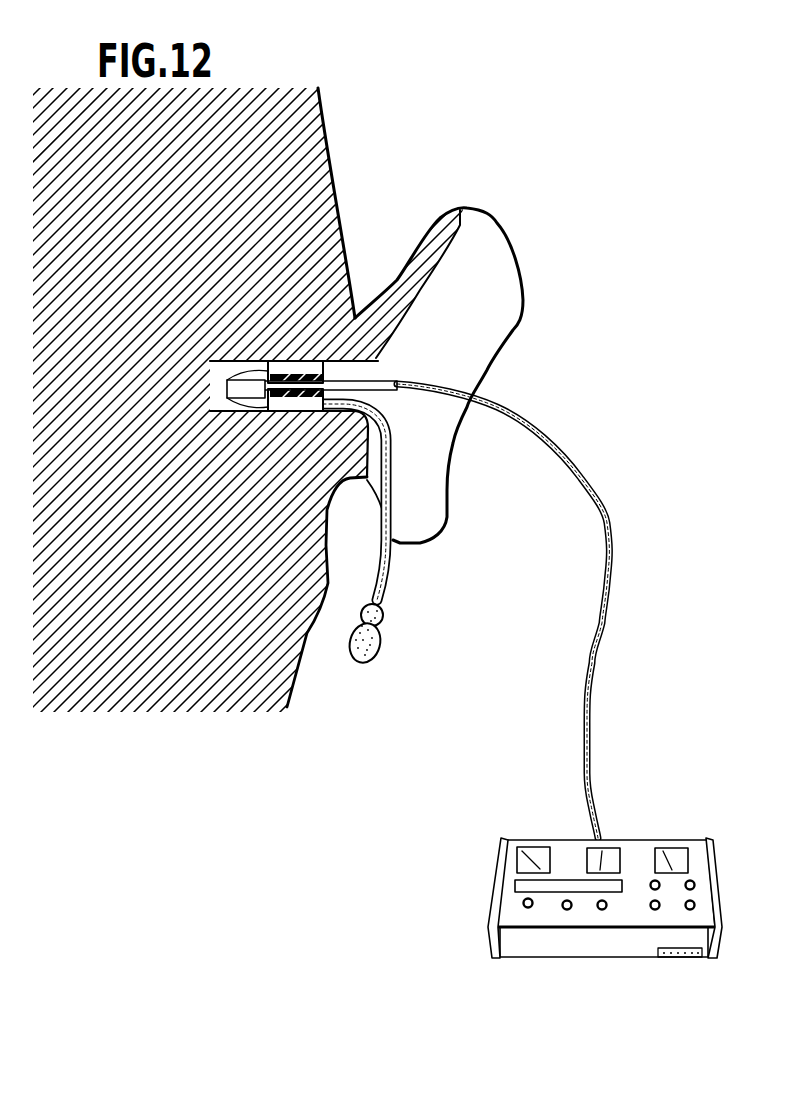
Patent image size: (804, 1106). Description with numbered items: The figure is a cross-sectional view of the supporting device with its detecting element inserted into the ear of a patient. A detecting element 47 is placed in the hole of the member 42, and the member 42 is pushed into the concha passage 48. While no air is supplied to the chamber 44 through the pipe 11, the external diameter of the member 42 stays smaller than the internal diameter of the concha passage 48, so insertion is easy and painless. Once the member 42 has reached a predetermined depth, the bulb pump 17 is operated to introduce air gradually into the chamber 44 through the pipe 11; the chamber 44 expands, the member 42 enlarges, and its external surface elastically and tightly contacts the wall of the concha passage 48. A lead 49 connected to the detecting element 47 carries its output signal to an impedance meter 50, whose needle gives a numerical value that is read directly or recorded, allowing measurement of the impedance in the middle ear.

The pipe 11 is at (384, 489).
The bulb pump 17 is at (381, 629).
The member 42 is at (227, 386).
The chamber 44 is at (328, 373).
The detecting element 47 is at (383, 380).
The concha passage 48 is at (343, 361).
The lead 49 is at (589, 658).
The impedance meter 50 is at (497, 878).